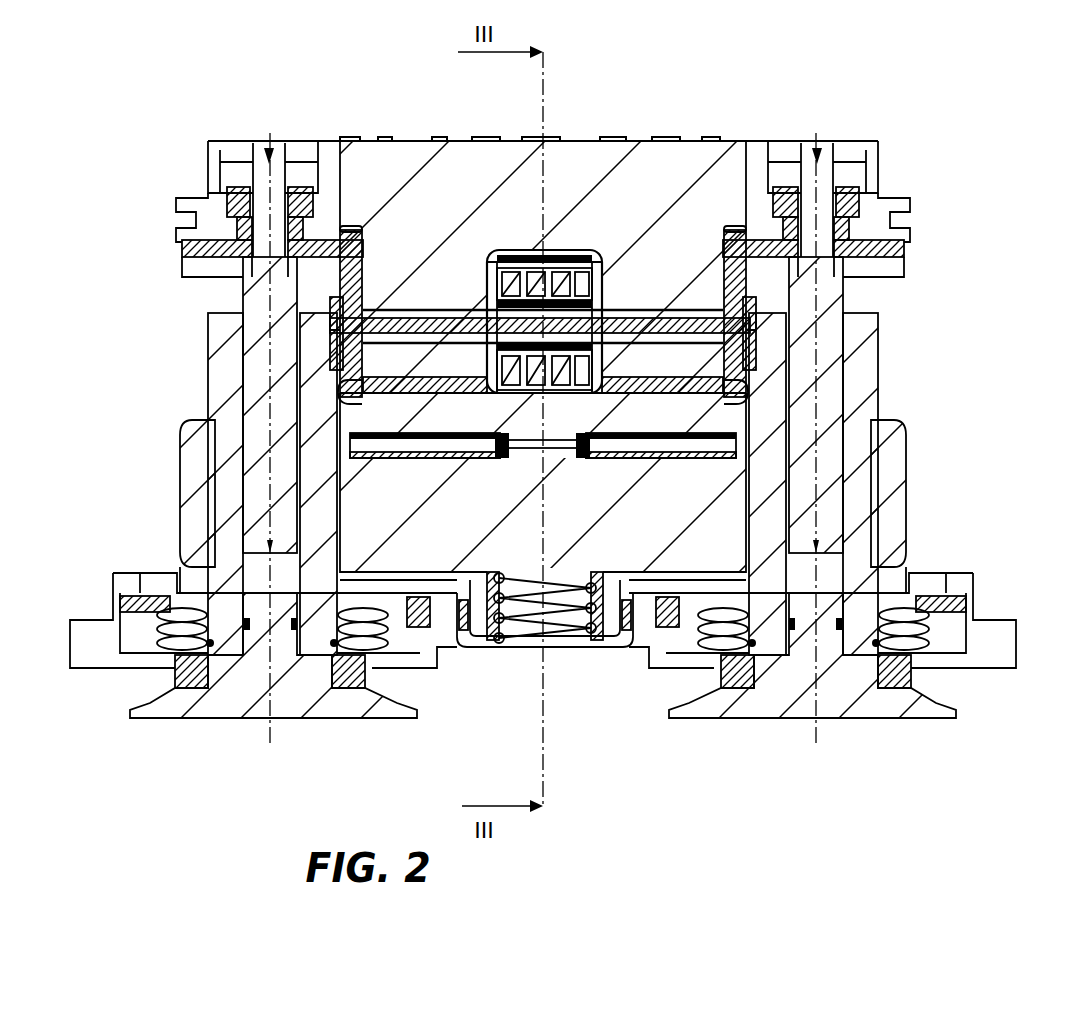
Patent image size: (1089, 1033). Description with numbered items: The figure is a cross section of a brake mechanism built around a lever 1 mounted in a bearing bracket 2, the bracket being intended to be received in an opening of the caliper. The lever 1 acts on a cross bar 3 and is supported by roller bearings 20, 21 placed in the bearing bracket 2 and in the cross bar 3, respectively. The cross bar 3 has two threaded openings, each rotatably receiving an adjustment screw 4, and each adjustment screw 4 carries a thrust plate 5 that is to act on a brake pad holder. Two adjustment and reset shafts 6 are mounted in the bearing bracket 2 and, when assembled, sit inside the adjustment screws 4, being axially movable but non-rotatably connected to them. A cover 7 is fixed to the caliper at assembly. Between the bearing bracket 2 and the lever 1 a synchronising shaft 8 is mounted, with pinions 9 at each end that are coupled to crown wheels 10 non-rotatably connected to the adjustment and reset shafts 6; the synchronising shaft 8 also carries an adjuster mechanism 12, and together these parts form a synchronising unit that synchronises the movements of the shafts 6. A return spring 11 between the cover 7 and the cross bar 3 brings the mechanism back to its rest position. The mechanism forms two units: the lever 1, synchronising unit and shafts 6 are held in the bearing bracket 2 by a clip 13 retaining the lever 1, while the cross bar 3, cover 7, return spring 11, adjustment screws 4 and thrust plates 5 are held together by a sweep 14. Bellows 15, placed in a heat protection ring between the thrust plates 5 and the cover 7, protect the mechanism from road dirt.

The lever 1 is at (843, 395).
The bearing bracket 2 is at (667, 160).
The cross bar 3 is at (730, 525).
The adjustment screw 4 is at (210, 360).
The thrust plate 5 is at (300, 707).
The adjustment and reset shaft 6 is at (247, 283).
The cover 7 is at (605, 665).
The synchronising shaft 8 is at (787, 327).
The pinion 9 is at (742, 320).
The crown wheel 10 is at (905, 237).
The return spring 11 is at (520, 635).
The adjuster mechanism 12 is at (510, 250).
The clip 13 is at (550, 255).
The sweep 14 is at (563, 450).
The bellows 15 is at (943, 653).
The roller bearing 20 is at (345, 400).
The roller bearing 21 is at (757, 453).